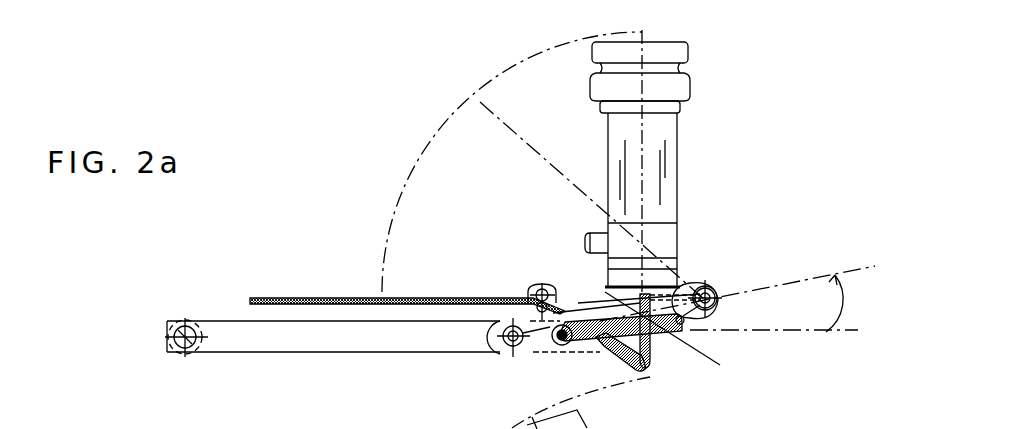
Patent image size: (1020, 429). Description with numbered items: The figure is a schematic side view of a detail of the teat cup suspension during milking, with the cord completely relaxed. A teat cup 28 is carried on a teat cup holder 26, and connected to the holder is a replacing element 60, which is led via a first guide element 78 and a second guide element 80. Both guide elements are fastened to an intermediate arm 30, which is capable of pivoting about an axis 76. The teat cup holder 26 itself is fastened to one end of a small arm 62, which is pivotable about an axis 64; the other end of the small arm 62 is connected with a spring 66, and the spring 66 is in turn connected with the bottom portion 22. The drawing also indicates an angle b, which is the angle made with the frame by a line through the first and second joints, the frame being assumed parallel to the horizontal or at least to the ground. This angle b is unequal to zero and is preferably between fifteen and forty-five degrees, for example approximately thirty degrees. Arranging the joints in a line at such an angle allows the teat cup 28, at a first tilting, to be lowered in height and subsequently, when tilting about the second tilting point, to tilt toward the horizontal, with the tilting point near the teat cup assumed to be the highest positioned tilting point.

The teat cup 28 is at (660, 156).
The teat cup holder 26 is at (605, 292).
The bottom portion 22 is at (385, 337).
The axis 76 is at (500, 356).
The replacing element 60 is at (450, 298).
The second guide element 80 is at (541, 290).
The intermediate arm 30 is at (690, 330).
The spring 66 is at (660, 357).
The first guide element 78 is at (650, 360).
The axis 64 is at (723, 295).
The small arm 62 is at (705, 286).
The angle b is at (737, 299).